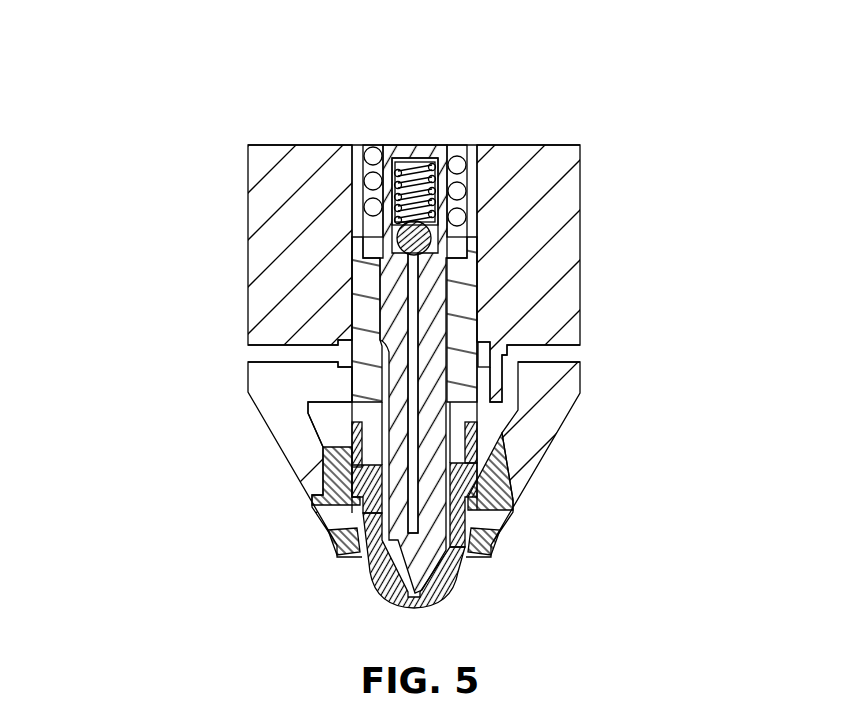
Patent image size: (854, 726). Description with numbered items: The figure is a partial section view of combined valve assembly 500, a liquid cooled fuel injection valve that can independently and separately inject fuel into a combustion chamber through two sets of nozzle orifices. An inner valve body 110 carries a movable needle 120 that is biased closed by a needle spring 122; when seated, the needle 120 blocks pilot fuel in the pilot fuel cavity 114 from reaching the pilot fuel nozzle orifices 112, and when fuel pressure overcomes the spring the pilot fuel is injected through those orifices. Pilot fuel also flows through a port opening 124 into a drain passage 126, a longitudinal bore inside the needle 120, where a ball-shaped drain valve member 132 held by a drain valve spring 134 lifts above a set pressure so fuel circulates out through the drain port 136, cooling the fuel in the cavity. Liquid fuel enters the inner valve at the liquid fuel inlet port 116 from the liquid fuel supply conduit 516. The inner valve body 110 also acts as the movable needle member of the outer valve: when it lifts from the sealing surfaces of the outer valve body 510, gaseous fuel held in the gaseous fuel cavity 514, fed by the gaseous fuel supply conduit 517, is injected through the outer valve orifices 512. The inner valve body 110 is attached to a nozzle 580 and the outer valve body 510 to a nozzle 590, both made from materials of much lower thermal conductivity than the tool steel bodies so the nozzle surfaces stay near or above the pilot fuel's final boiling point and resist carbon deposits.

The combined valve assembly 500 is at (178, 108).
The outer valve body 510 is at (288, 243).
The gaseous fuel supply conduit 517 is at (557, 352).
The outer valve orifices 512 is at (487, 523).
The nozzle 590 is at (333, 511).
The port opening 124 is at (355, 493).
The gaseous fuel cavity 514 is at (485, 438).
The pilot fuel nozzle orifices 112 is at (370, 565).
The nozzle 580 is at (396, 598).
The pilot fuel cavity 114 is at (386, 466).
The drain passage 126 is at (413, 440).
The inner valve body 110 is at (362, 320).
The liquid fuel inlet port 116 is at (288, 353).
The liquid fuel supply conduit 516 is at (352, 350).
The needle 120 is at (345, 400).
The drain port 136 is at (363, 189).
The drain valve spring 134 is at (465, 183).
The needle spring 122 is at (383, 228).
The drain valve member 132 is at (447, 218).